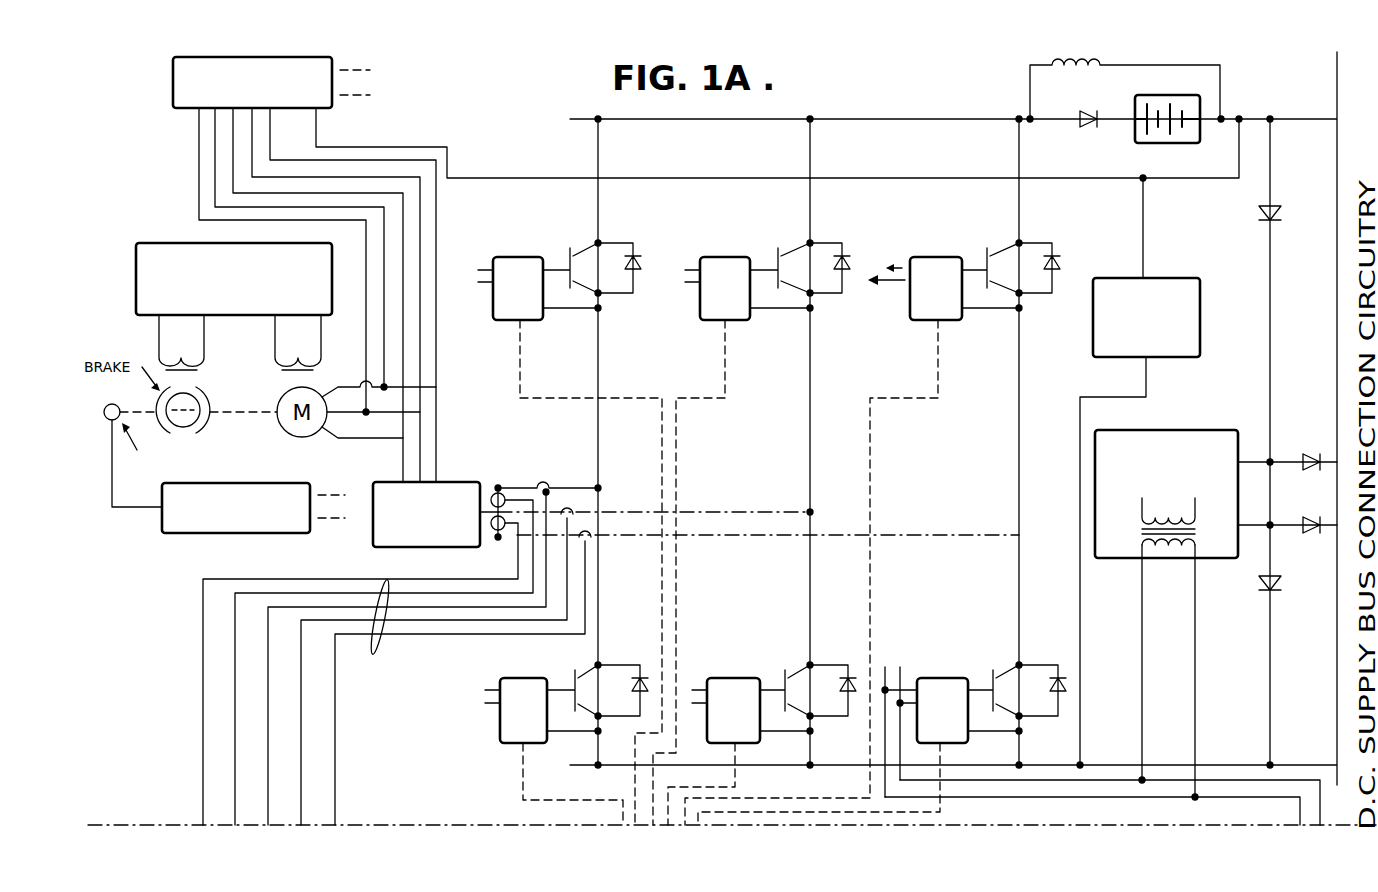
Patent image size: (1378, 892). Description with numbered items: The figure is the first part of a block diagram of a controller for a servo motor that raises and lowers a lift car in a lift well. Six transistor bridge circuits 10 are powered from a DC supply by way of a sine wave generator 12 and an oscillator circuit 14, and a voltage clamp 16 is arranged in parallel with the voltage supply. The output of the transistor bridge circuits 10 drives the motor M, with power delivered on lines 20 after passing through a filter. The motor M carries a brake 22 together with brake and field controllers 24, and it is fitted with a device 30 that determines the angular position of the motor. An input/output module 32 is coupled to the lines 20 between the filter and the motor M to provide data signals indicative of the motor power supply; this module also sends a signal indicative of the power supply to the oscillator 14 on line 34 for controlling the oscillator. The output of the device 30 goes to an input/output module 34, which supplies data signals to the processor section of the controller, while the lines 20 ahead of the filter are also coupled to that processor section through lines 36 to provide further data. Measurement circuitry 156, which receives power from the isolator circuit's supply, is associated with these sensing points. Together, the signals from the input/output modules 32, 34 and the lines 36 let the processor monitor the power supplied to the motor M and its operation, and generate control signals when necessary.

The transistor bridge circuit 10 is at (543, 255).
The sine wave generator 12 is at (1192, 430).
The oscillator circuit 14 is at (1202, 70).
The voltage clamp 16 is at (1163, 285).
The lines 20 is at (489, 510).
The brake 22 is at (200, 397).
The brake and field controllers 24 is at (158, 243).
The device for determining angular position 30 is at (112, 404).
The input/output module 32 is at (175, 97).
The input/output module 34 is at (247, 535).
The lines 36 is at (428, 620).
The measurement circuitry 156 is at (502, 540).